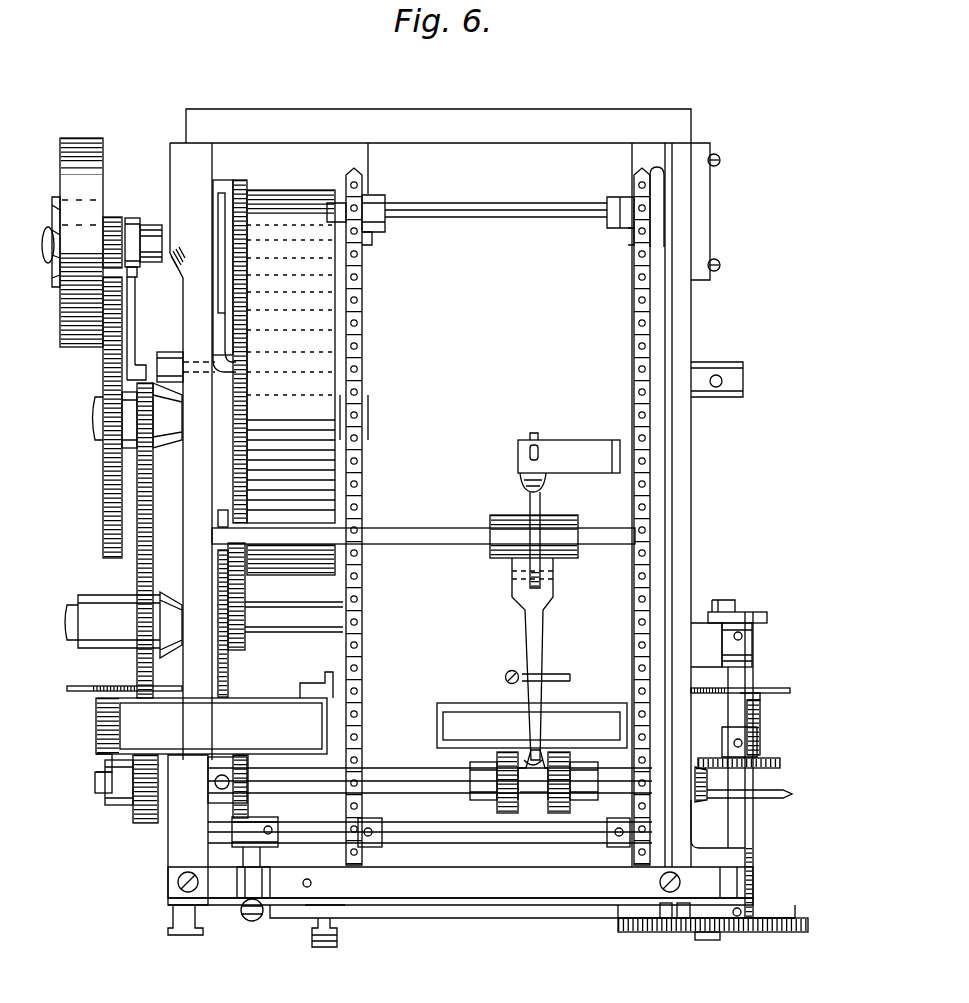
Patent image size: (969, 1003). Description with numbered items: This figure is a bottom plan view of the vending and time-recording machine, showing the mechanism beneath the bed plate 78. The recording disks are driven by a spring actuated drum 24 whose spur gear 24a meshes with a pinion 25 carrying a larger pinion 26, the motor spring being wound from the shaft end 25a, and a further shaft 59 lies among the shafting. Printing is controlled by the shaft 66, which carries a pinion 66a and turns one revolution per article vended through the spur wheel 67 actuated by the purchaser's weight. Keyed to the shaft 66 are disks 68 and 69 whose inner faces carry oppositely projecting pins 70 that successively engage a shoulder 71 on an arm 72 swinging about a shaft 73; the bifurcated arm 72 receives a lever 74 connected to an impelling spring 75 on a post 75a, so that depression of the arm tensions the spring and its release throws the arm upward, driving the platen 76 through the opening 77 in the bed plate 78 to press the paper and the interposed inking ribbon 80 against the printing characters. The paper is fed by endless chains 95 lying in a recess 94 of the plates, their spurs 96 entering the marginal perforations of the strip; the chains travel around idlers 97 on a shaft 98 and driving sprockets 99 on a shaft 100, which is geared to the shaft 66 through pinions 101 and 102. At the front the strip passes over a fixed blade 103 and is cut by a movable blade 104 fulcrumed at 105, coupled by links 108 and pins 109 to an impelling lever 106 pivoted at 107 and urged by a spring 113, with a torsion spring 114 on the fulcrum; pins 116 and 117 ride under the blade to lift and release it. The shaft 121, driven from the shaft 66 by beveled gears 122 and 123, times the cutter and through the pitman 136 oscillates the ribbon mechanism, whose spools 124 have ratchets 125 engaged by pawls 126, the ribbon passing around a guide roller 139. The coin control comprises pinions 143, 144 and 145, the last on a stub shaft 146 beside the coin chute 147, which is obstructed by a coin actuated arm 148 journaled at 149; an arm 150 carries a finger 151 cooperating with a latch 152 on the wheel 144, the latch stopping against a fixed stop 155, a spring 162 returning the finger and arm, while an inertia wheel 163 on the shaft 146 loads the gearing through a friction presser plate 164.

The spring actuated drum 24 is at (318, 307).
The spur gear 24a is at (242, 458).
The pinion 25 is at (243, 608).
The shaft end 25a is at (730, 364).
The larger pinion 26 is at (230, 690).
The shaft 59 is at (788, 800).
The shaft 66 is at (400, 774).
The pinion 66a is at (135, 812).
The spur wheel 67 is at (137, 578).
The disk 68 is at (512, 814).
The disk 69 is at (568, 814).
The pins 70 is at (550, 752).
The shoulder 71 is at (530, 755).
The arm 72 is at (541, 652).
The shaft 73 is at (455, 526).
The lever 74 is at (542, 505).
The impelling spring 75 is at (528, 482).
The post 75a is at (570, 440).
The platen 76 is at (458, 725).
The opening 77 is at (481, 704).
The bed plate 78 is at (485, 367).
The inking ribbon 80 is at (426, 690).
The recess 94 is at (372, 240).
The endless chains 95 is at (358, 370).
The spurs 96 is at (360, 430).
The idlers 97 is at (367, 198).
The shaft 98 is at (482, 219).
The driving sprockets 99 is at (378, 852).
The shaft 100 is at (470, 833).
The pinion 101 is at (278, 826).
The pinion 102 is at (250, 788).
The fixed blade 103 is at (412, 907).
The movable blade 104 is at (480, 919).
The fulcrum 105 is at (340, 937).
The impelling lever 106 is at (241, 903).
The pivot 107 is at (185, 920).
The links 108 is at (657, 912).
The pins 109 is at (768, 935).
The spring 113 is at (262, 925).
The torsion spring 114 is at (322, 945).
The pin 116 is at (683, 922).
The pin 117 is at (668, 922).
The shaft 121 is at (755, 828).
The beveled gear 122 is at (778, 762).
The beveled gear 123 is at (700, 803).
The spools 124 is at (95, 775).
The ratchets 125 is at (98, 703).
The pawls 126 is at (97, 686).
The pitman 136 is at (746, 610).
The guide roller 139 is at (315, 685).
The pinion 143 is at (118, 432).
The pinion 144 is at (108, 498).
The pinion 145 is at (105, 224).
The stub shaft 146 is at (148, 226).
The coin chute 147 is at (226, 180).
The coin actuated arm 148 is at (224, 272).
The journal 149 is at (171, 352).
The arm 150 is at (146, 340).
The finger 151 is at (127, 376).
The latch 152 is at (137, 318).
The fixed stop 155 is at (133, 220).
The spring 162 is at (235, 358).
The inertia wheel 163 is at (94, 178).
The presser plate 164 is at (52, 197).